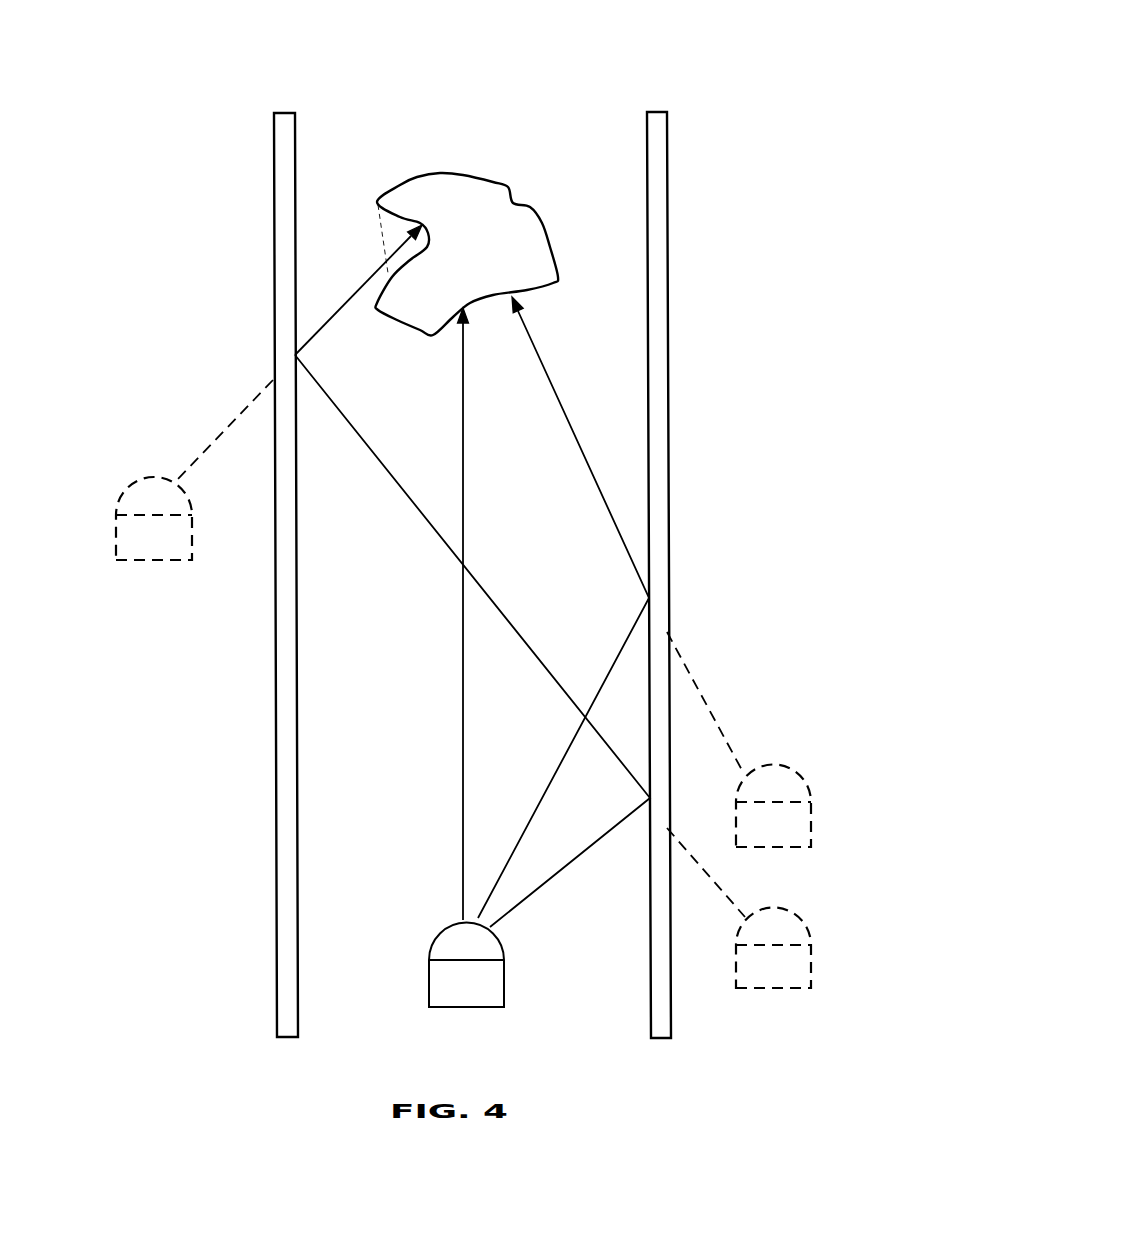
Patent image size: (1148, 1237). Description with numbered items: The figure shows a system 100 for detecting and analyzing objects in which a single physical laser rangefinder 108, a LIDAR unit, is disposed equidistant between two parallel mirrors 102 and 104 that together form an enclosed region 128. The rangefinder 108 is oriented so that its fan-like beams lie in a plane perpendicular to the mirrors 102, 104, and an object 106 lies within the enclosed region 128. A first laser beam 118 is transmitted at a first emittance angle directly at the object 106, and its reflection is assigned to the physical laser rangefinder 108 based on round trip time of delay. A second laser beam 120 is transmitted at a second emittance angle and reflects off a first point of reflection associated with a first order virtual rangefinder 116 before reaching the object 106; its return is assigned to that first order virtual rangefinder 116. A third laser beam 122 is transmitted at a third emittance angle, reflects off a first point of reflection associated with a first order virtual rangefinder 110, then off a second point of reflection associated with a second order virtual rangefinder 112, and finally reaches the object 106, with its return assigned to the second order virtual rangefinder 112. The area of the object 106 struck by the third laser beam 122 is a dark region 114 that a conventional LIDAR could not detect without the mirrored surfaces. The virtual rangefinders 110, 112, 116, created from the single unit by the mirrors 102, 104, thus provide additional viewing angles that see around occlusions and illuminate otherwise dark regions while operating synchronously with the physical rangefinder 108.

The system for detecting and analyzing objects 100 is at (754, 44).
The first parallel mirror 102 is at (295, 150).
The second parallel mirror 104 is at (647, 133).
The object 106 is at (468, 178).
The physical laser rangefinder 108 is at (504, 960).
The first order virtual rangefinder 110 is at (793, 910).
The second order virtual rangefinder 112 is at (143, 477).
The dark region 114 is at (362, 234).
The first order virtual rangefinder 116 is at (773, 762).
The first laser beam 118 is at (462, 750).
The second laser beam 120 is at (568, 747).
The third laser beam 122 is at (543, 887).
The enclosed region 128 is at (509, 512).